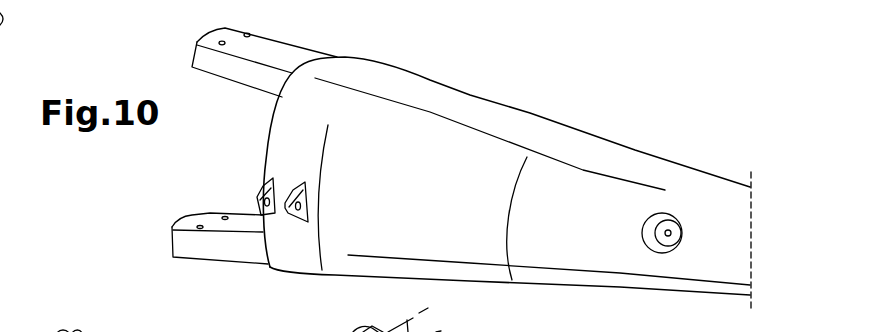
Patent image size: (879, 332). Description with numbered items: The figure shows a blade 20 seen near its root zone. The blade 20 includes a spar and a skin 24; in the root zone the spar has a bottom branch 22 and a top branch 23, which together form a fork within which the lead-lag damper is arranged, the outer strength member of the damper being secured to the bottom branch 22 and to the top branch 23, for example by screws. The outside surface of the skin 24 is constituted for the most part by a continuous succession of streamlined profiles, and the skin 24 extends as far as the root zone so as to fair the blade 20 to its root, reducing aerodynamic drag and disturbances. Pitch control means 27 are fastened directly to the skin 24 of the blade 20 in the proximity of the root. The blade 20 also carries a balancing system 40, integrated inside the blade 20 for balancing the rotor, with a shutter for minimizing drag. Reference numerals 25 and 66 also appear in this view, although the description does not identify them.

The blade 20 is at (531, 66).
The bottom branch 22 is at (185, 245).
The top branch 23 is at (287, 53).
The skin 24 is at (634, 163).
The housing portion 25 is at (152, 0).
The pitch control means 27 is at (257, 197).
The balancing system 40 is at (650, 252).
The actuating element 66 is at (276, 331).